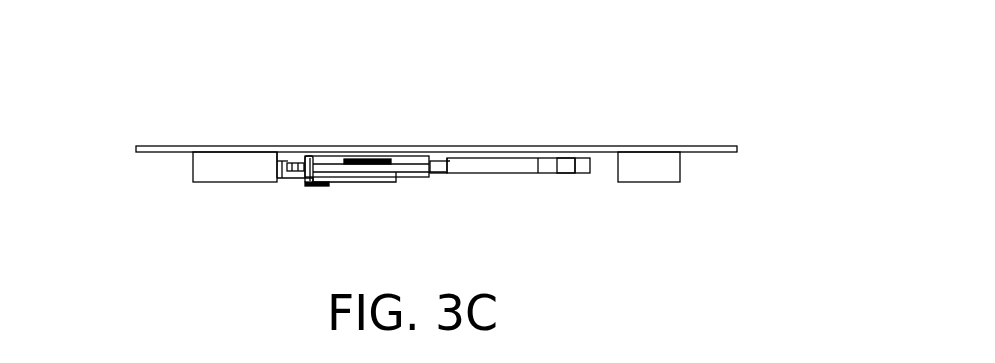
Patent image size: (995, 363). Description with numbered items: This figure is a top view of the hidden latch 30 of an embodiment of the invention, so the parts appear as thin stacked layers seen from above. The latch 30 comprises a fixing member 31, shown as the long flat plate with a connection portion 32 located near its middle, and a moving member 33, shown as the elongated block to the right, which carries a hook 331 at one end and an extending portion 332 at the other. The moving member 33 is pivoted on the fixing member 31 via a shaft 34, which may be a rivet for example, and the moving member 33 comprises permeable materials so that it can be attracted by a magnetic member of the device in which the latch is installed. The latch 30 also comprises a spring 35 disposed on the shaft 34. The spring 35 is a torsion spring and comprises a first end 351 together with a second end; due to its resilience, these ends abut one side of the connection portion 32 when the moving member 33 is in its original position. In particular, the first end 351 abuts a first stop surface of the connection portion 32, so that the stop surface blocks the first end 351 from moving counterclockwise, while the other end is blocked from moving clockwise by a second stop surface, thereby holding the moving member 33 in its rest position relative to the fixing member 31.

The latch 30 is at (55, 38).
The fixing member 31 is at (168, 146).
The connection portion 32 is at (292, 180).
The moving member 33 is at (492, 170).
The hook 331 is at (565, 170).
The extending portion 332 is at (299, 158).
The shaft 34 is at (367, 165).
The spring 35 is at (386, 162).
The first end 351 is at (323, 183).